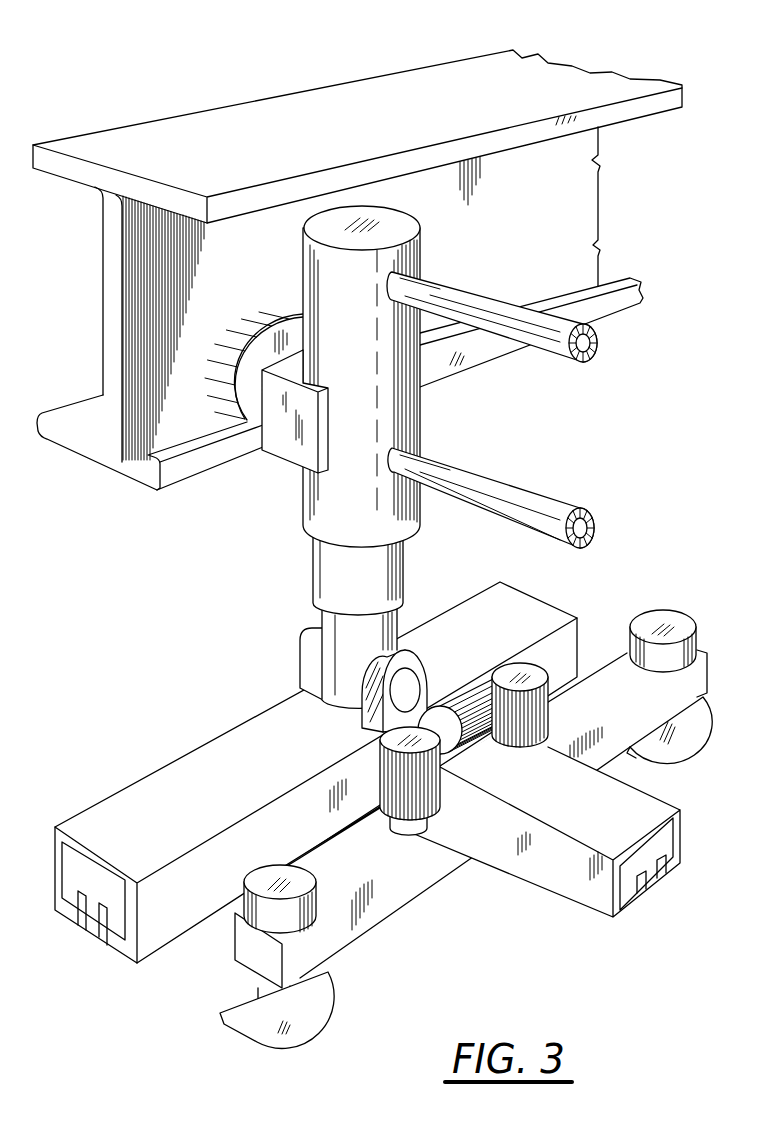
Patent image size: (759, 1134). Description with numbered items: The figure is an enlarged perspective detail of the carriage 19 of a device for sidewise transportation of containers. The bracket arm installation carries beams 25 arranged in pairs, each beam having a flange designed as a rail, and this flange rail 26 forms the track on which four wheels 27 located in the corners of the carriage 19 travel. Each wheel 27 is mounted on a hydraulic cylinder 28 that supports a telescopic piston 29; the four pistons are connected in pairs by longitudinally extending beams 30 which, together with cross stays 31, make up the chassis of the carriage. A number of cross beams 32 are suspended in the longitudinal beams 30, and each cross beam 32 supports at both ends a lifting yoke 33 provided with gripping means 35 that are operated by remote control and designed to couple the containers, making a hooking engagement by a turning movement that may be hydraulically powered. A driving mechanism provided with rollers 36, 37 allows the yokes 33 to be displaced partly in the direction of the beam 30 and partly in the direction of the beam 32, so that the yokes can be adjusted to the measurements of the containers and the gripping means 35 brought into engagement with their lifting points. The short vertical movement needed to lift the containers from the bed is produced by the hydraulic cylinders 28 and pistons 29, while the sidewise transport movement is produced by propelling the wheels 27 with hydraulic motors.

The carriage 19 is at (386, 627).
The beam 25 is at (267, 120).
The bottom flange rail 26 is at (153, 477).
The wheel 27 is at (248, 390).
The hydraulic cylinder 28 is at (320, 507).
The telescopic piston 29 is at (350, 647).
The longitudinally extending beam 30 is at (143, 802).
The cross stay 31 is at (500, 487).
The cross beam 32 is at (583, 875).
The lifting yoke 33 is at (380, 912).
The gripping means 35 is at (663, 748).
The roller 36 is at (417, 792).
The roller 37 is at (480, 740).